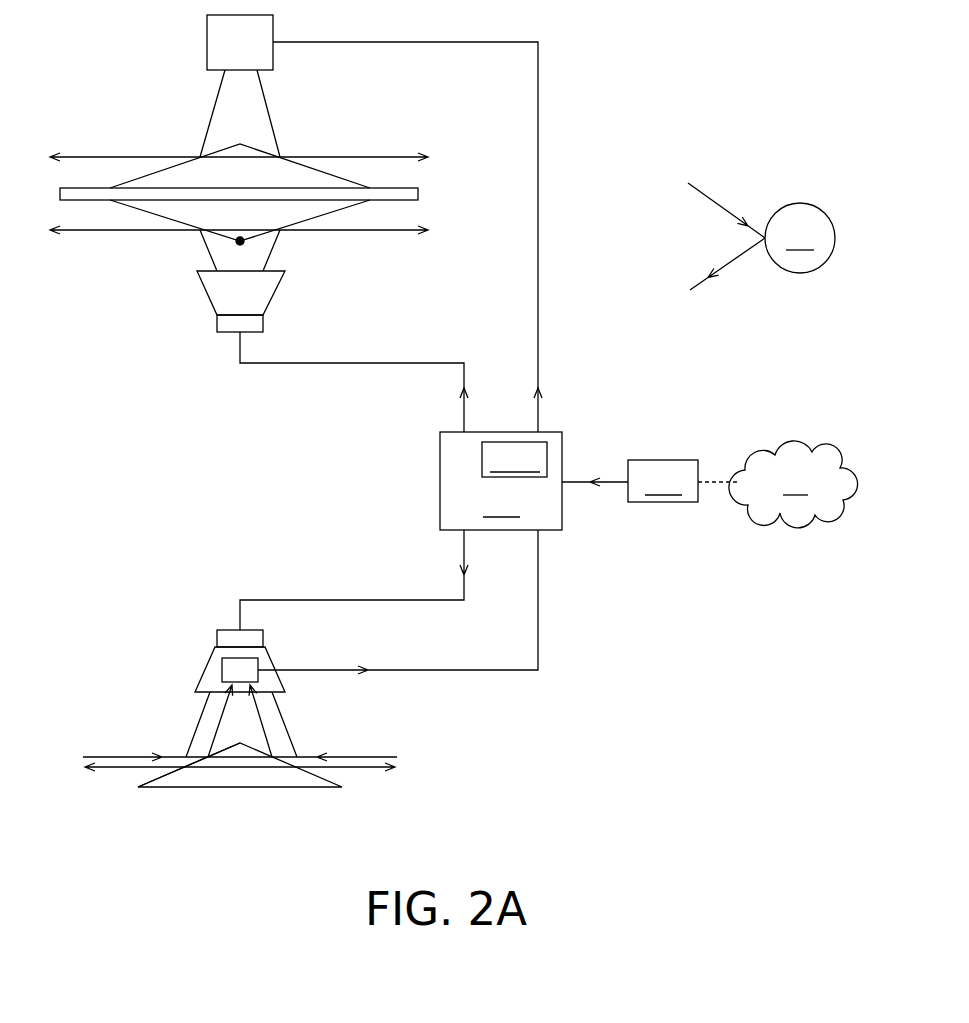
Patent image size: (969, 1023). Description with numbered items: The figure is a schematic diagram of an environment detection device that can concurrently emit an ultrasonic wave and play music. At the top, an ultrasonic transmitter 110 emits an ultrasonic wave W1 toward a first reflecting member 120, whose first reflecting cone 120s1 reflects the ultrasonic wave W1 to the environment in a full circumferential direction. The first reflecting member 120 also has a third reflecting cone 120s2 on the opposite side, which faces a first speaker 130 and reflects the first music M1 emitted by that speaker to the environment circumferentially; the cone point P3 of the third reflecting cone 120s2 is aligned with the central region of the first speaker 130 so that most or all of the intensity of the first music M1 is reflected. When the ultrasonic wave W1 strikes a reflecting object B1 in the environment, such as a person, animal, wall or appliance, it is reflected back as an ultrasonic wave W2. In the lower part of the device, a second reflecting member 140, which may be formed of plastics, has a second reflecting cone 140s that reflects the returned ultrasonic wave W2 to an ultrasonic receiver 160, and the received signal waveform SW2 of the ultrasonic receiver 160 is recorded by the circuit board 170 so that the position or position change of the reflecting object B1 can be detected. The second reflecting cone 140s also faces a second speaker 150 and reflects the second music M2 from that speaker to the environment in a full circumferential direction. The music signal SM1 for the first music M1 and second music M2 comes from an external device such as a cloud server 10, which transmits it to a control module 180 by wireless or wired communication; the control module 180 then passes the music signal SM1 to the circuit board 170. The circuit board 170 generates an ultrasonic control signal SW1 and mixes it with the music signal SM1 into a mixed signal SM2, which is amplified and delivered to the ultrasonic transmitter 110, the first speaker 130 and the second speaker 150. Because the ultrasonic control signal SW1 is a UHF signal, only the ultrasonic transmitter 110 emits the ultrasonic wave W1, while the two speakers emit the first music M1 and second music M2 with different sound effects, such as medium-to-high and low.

The ultrasonic transmitter 110 is at (207, 40).
The first reflecting member 120 is at (180, 217).
The first reflecting cone 120s1 is at (137, 177).
The third reflecting cone 120s2 is at (343, 209).
The cone point P3 is at (240, 244).
The first speaker 130 is at (205, 295).
The second reflecting member 140 is at (251, 778).
The second reflecting cone 140s is at (162, 776).
The second speaker 150 is at (215, 655).
The ultrasonic receiver 160 is at (222, 672).
The circuit board 170 is at (501, 481).
The control module 180 is at (684, 481).
The cloud server 10 is at (793, 484).
The reflecting object B1 is at (800, 238).
The ultrasonic wave W1 is at (407, 191).
The ultrasonic wave reflected back from the environment W2 is at (424, 499).
The first music M1 is at (260, 230).
The second music M2 is at (242, 783).
The music signal SM1 is at (595, 468).
The mixed signal SM2 is at (417, 507).
The ultrasonic control signal SW1 is at (514, 459).
The received signal waveform SW2 is at (398, 616).